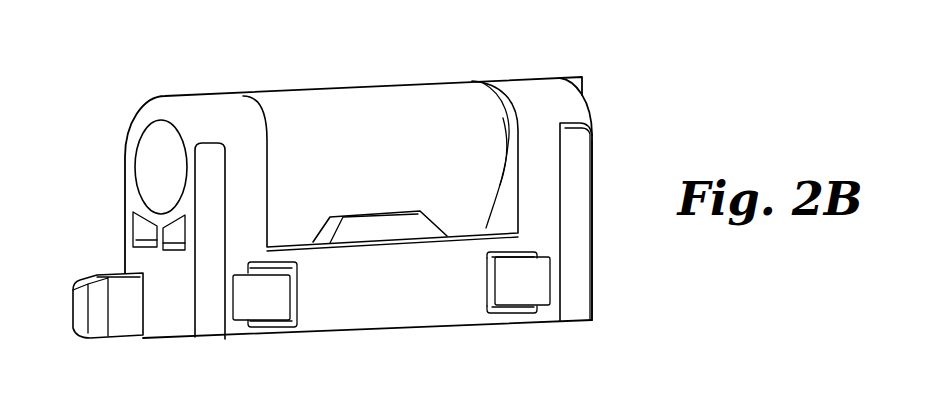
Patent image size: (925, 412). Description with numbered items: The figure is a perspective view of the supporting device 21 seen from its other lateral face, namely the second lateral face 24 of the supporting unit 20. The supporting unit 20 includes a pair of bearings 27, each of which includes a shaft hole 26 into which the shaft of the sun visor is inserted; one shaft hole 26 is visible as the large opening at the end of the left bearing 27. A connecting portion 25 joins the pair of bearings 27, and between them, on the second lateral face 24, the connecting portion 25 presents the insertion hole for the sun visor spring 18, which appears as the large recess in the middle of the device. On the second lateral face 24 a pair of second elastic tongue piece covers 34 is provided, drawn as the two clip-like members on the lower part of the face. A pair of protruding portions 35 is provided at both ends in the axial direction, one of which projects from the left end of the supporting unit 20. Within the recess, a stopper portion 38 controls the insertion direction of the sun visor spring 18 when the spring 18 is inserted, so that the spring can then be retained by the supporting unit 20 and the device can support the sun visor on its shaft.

The sun visor spring 18 is at (393, 135).
The supporting unit 20 is at (405, 306).
The supporting device 21 is at (383, 366).
The second lateral face 24 is at (540, 212).
The connecting portion 25 is at (448, 300).
The shaft hole 26 is at (153, 163).
The bearing 27 is at (243, 152).
The second elastic tongue piece cover 34 is at (263, 308).
The protruding portion 35 is at (97, 307).
The stopper portion 38 is at (352, 230).